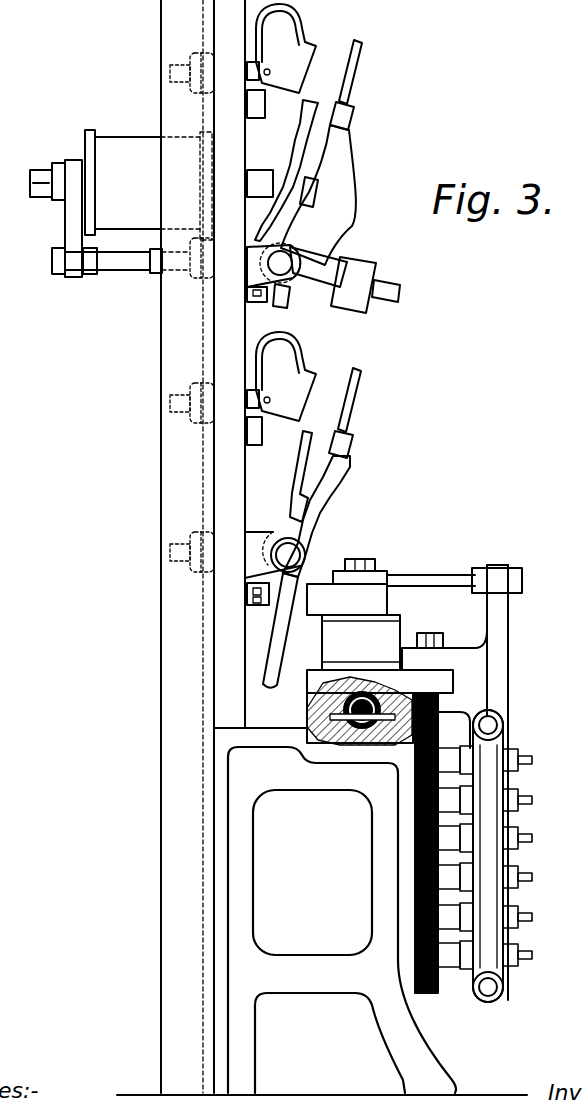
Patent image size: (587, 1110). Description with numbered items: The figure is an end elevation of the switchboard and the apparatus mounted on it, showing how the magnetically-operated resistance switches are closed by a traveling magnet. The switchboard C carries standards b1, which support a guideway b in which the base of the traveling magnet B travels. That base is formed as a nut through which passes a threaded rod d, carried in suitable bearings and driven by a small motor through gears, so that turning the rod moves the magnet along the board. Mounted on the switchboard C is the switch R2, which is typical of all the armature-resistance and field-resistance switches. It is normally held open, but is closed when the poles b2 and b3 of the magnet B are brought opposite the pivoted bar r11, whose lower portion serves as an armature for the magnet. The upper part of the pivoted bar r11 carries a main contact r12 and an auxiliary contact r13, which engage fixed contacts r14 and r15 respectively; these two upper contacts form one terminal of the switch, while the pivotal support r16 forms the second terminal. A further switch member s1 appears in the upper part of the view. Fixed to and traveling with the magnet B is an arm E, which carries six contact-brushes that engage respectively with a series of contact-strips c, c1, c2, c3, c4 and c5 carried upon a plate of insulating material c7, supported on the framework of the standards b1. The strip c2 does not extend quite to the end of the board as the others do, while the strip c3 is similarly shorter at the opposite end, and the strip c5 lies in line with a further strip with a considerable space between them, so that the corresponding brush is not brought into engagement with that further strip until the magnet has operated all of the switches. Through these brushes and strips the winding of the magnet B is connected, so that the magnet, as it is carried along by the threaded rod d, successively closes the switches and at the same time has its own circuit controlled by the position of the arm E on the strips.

The switchboard C is at (203, 546).
The upper lever s1 is at (338, 192).
The armature-resistance switch R2 is at (317, 510).
The fixed contact r15 is at (304, 392).
The auxiliary contact r13 is at (358, 377).
The fixed contact r14 is at (262, 434).
The main contact r12 is at (303, 450).
The pivoted bar r11 is at (325, 495).
The pivotal support r16 is at (272, 523).
The pole of the magnet b2 is at (316, 600).
The traveling magnet B is at (361, 642).
The pole of the magnet b3 is at (308, 678).
The guideway b is at (307, 712).
The threaded rod d is at (361, 735).
The arm E is at (454, 783).
The contact-strip c is at (452, 760).
The contact-strip c1 is at (485, 793).
The contact-strip c2 is at (485, 831).
The contact-strip c3 is at (485, 870).
The contact-strip c4 is at (485, 910).
The contact-strip c5 is at (485, 948).
The plate of insulating material c7 is at (442, 856).
The standards b1 is at (248, 879).